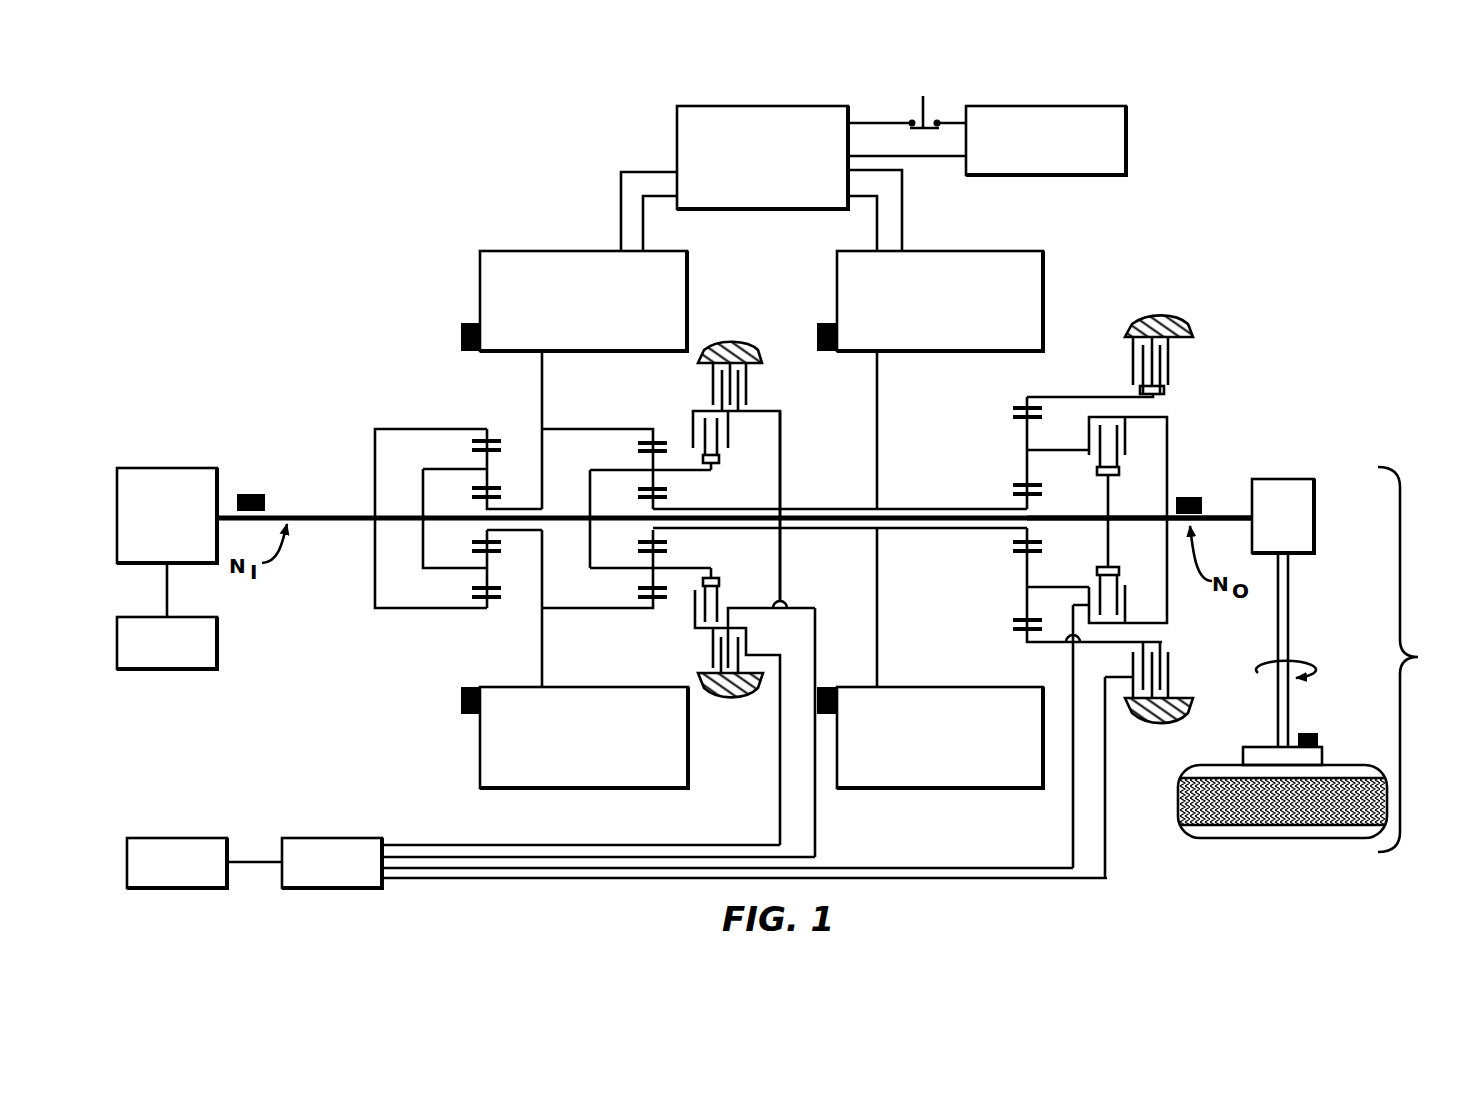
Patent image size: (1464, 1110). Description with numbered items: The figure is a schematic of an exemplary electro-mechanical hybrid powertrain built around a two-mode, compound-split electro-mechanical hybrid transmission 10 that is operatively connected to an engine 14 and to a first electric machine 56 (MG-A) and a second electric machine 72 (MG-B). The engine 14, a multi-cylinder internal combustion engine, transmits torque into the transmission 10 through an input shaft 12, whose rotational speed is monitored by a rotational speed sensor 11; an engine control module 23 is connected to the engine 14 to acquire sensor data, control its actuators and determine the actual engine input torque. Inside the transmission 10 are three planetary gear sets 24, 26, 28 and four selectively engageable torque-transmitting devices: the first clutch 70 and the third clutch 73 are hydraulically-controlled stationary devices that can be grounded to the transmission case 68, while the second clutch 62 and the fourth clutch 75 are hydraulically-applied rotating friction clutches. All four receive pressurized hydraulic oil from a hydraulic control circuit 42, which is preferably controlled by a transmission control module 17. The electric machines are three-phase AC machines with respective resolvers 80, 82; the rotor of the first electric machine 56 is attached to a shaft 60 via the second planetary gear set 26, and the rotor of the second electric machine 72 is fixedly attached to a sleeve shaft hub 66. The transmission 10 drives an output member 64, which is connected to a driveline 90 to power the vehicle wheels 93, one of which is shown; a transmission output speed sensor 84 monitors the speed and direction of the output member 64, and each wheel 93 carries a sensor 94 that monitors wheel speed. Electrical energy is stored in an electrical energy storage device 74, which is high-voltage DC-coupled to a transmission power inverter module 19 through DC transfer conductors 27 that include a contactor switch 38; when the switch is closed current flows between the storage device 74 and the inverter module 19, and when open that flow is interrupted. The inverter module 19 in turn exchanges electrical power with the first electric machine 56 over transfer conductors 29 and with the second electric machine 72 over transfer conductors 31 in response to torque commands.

The electro-mechanical hybrid transmission 10 is at (438, 210).
The rotational speed sensor 11 is at (250, 494).
The input shaft 12 is at (330, 515).
The engine 14 is at (178, 468).
The transmission control module 17 is at (165, 838).
The transmission power inverter module 19 is at (677, 128).
The engine control module 23 is at (215, 668).
The first planetary gear set 24 is at (477, 422).
The second planetary gear set 26 is at (646, 422).
The DC transfer conductors 27 is at (865, 122).
The third planetary gear set 28 is at (1017, 392).
The transfer conductors 29 is at (621, 208).
The transfer conductors 31 is at (902, 205).
The contactor switch 38 is at (924, 97).
The hydraulic control circuit 42 is at (298, 838).
The first electric machine 56 is at (480, 289).
The shaft 60 is at (1080, 512).
The clutch C2 62 is at (1130, 456).
The output member 64 is at (1220, 515).
The sleeve shaft hub 66 is at (915, 509).
The transmission case 68 is at (738, 348).
The clutch C1 70 is at (1121, 362).
The second electric machine 72 is at (1043, 268).
The clutch C3 73 is at (756, 386).
The electrical energy storage device 74 is at (1126, 128).
The clutch C4 75 is at (738, 447).
The resolver 80 is at (461, 337).
The resolver 82 is at (826, 323).
The transmission output speed sensor 84 is at (1190, 497).
The driveline 90 is at (1320, 659).
The vehicle wheel 93 is at (1243, 758).
The wheel speed sensor 94 is at (1310, 733).